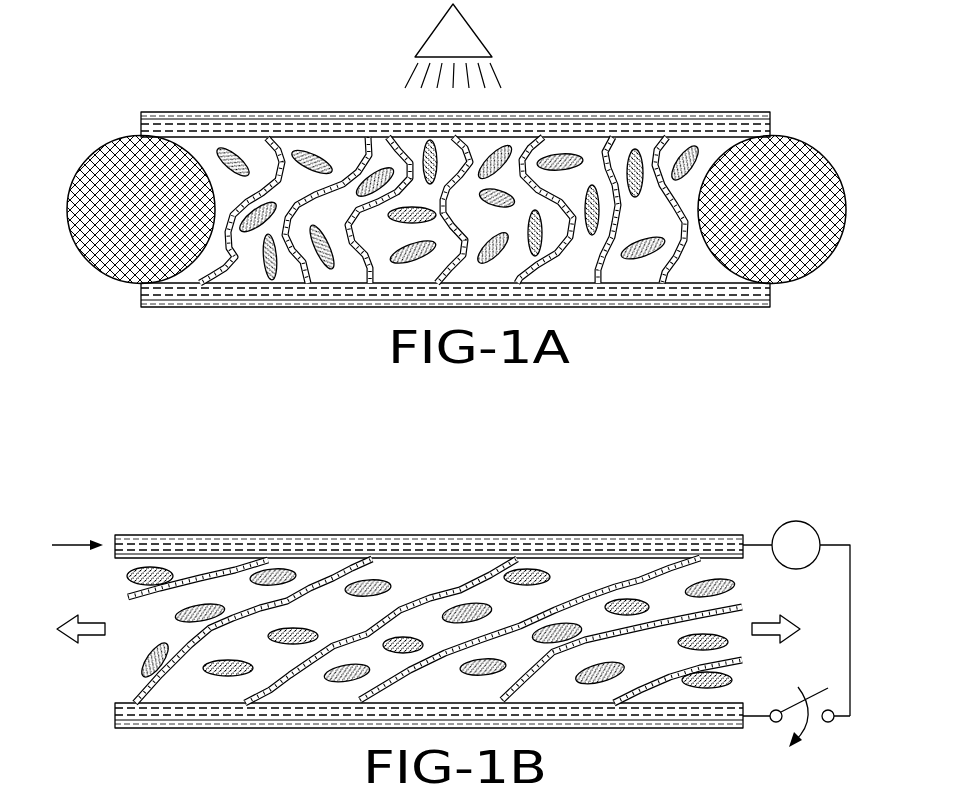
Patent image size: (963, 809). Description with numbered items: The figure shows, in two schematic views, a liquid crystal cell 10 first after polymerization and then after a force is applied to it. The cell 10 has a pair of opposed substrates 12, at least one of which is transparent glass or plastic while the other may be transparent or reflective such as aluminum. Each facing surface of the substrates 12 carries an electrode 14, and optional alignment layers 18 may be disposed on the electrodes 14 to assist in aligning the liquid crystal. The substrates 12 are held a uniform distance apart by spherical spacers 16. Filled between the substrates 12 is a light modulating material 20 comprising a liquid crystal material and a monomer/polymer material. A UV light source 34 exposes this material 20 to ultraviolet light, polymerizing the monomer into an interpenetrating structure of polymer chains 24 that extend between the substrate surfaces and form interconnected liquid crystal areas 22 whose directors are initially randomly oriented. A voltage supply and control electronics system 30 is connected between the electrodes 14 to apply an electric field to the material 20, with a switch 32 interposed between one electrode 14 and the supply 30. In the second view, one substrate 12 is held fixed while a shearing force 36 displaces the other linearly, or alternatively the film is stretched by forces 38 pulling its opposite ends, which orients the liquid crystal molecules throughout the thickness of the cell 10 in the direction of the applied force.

In FIG. 1A, the liquid crystal cell 10 is at (286, 72).
In FIG. 1B, the liquid crystal cell 10 is at (258, 492).
In FIG. 1A, the substrate 12 is at (372, 114).
In FIG. 1B, the substrate 12 is at (397, 536).
In FIG. 1A, the electrode 14 is at (141, 122).
In FIG. 1B, the electrode 14 is at (114, 546).
In FIG. 1A, the spherical spacer 16 is at (98, 180).
In FIG. 1A, the alignment layer 18 is at (140, 135).
In FIG. 1B, the alignment layer 18 is at (125, 557).
In FIG. 1A, the light modulating material 20 is at (310, 215).
In FIG. 1A, the liquid crystal area 22 is at (558, 158).
In FIG. 1B, the liquid crystal area 22 is at (527, 577).
In FIG. 1A, the polymer chain 24 is at (653, 158).
In FIG. 1B, the polymer chain 24 is at (475, 583).
In FIG. 1B, the voltage supply and control electronics system 30 is at (782, 524).
In FIG. 1B, the switch 32 is at (828, 690).
In FIG. 1A, the light source 34 is at (460, 38).
In FIG. 1B, the shearing force 36 is at (68, 545).
In FIG. 1B, the stretching force 38 is at (96, 634).